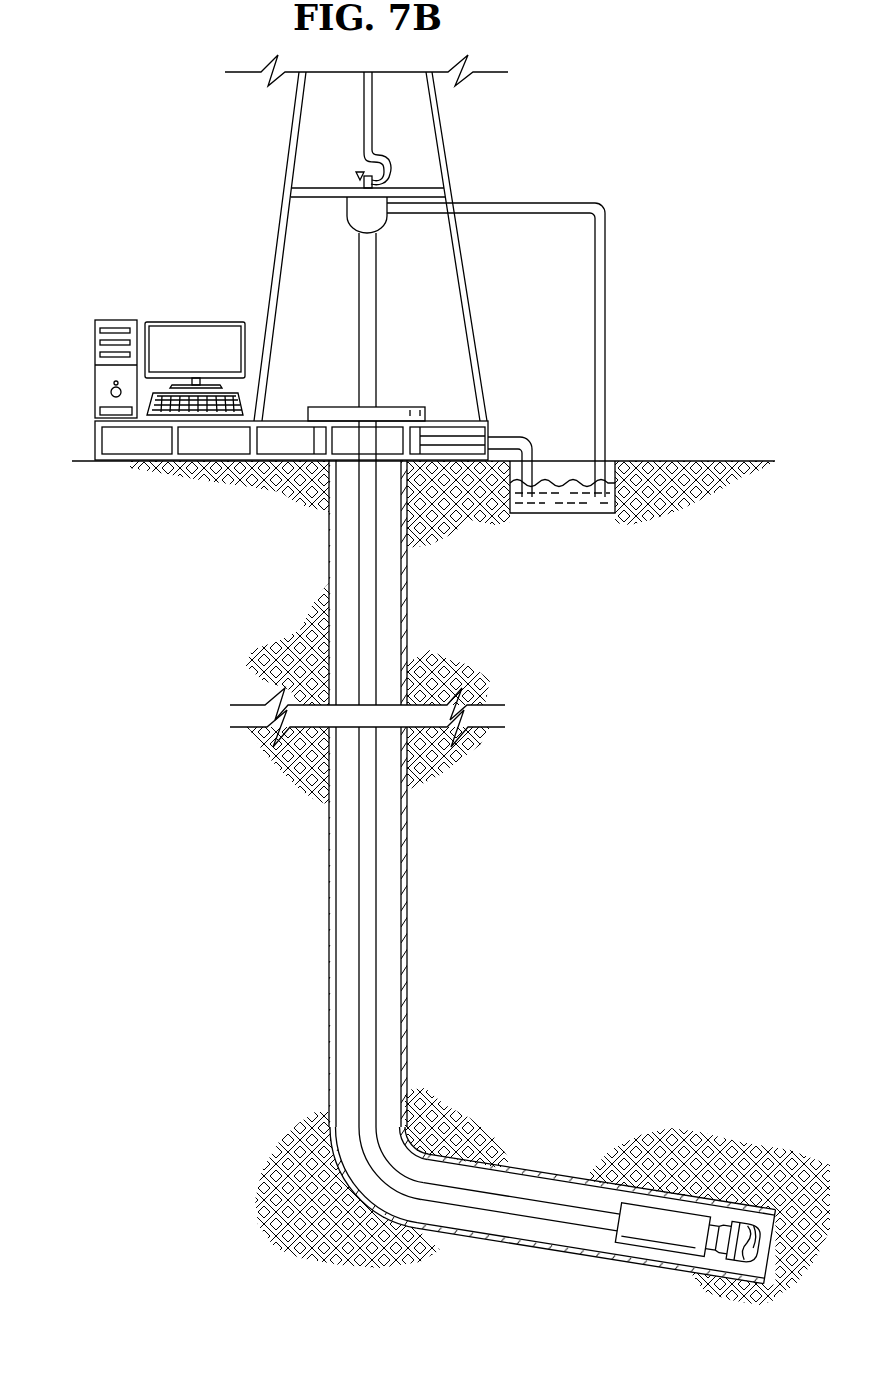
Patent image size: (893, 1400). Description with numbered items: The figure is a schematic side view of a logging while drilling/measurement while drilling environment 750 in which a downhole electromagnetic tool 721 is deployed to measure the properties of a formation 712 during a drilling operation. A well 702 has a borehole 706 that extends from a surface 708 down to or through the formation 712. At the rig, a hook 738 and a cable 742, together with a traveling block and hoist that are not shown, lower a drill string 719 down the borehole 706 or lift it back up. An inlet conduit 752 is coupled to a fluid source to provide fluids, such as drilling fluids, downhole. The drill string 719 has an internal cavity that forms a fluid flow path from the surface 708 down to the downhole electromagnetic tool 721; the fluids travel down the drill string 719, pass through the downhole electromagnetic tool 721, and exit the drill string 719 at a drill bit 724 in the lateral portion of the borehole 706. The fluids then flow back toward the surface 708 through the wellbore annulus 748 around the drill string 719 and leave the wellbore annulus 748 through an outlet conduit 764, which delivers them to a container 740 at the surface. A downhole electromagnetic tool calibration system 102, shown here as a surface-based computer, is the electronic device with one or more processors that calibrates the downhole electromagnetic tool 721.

The downhole electromagnetic tool calibration system 102 is at (118, 320).
The well 702 is at (392, 398).
The borehole 706 is at (403, 613).
The surface 708 is at (748, 460).
The formation 712 is at (568, 1127).
The drill string 719 is at (365, 977).
The downhole electromagnetic tool 721 is at (658, 1256).
The drill bit 724 is at (748, 1272).
The hook 738 is at (387, 168).
The container 740 is at (567, 505).
The cable 742 is at (362, 130).
The wellbore annulus 748 is at (347, 855).
The LWD/MWD environment 750 is at (212, 225).
The inlet conduit 752 is at (545, 203).
The outlet conduit 764 is at (507, 433).